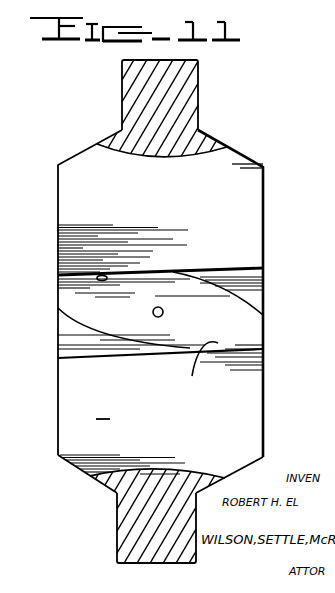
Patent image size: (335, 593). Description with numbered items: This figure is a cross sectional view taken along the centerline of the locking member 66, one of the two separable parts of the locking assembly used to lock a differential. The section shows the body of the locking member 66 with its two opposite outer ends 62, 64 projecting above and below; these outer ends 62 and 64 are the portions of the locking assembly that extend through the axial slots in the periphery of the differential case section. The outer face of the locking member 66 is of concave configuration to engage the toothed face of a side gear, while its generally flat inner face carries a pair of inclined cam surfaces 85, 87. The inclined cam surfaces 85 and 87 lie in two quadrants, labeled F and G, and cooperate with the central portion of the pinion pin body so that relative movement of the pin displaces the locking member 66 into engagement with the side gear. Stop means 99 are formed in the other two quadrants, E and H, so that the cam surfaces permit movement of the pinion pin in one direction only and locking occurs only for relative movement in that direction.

The outer end 62 is at (167, 100).
The outer end 64 is at (140, 523).
The locking member 66 is at (178, 213).
The inclined cam surface 85 is at (263, 272).
The inclined cam surface 87 is at (70, 339).
The stop means 99 is at (113, 277).